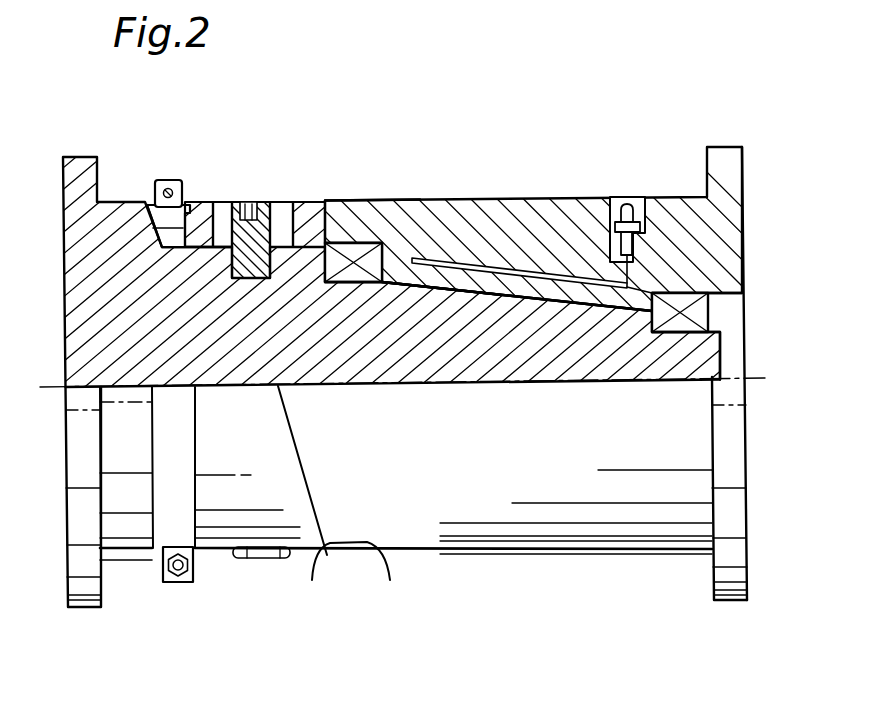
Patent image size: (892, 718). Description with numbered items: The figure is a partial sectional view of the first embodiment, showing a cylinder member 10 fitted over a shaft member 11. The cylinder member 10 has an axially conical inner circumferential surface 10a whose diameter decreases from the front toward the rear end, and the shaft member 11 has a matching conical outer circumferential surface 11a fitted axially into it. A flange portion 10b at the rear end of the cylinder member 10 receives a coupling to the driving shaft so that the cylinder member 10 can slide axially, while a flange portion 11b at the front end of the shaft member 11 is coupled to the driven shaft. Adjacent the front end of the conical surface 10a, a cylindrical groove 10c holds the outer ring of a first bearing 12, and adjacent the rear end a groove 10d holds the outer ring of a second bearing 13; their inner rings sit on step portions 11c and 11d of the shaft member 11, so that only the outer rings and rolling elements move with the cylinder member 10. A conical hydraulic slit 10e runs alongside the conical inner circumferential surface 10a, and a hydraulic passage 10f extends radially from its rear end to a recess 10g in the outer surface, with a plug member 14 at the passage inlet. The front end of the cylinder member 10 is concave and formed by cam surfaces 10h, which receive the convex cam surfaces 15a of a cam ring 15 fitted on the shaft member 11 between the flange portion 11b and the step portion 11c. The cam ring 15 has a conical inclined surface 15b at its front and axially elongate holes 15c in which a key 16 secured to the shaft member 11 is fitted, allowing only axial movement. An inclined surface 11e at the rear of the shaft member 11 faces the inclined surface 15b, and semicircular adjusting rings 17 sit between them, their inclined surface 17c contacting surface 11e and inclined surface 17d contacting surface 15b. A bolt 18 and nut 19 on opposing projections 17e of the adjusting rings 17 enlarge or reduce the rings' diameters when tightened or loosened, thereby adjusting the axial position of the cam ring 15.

The cylinder member 10 is at (465, 198).
The conical inner circumferential surface 10a is at (452, 288).
The flange portion 10b is at (728, 158).
The groove 10c is at (386, 208).
The groove 10d is at (675, 290).
The conical hydraulic slit 10e is at (508, 292).
The hydraulic passage 10f is at (636, 294).
The recess 10g is at (639, 204).
The cam surfaces 10h is at (325, 558).
The shaft member 11 is at (243, 365).
The conical outer circumferential surface 11a is at (455, 293).
The flange portion 11b is at (64, 182).
The step portion 11c is at (342, 282).
The step portion 11d is at (683, 334).
The inclined surface 11e is at (160, 249).
The first bearing 12 is at (369, 284).
The second bearing 13 is at (700, 314).
The plug member 14 is at (622, 200).
The cam ring 15 is at (312, 200).
The cam surfaces 15a is at (364, 243).
The inclined surface 15b is at (168, 226).
The elongate holes 15c is at (285, 212).
The key 16 is at (252, 214).
The adjusting rings 17 is at (176, 246).
The inclined surface 17c is at (150, 220).
The inclined surface 17d is at (217, 205).
The projections 17e is at (164, 192).
The bolt 18 is at (176, 178).
The nut 19 is at (171, 580).